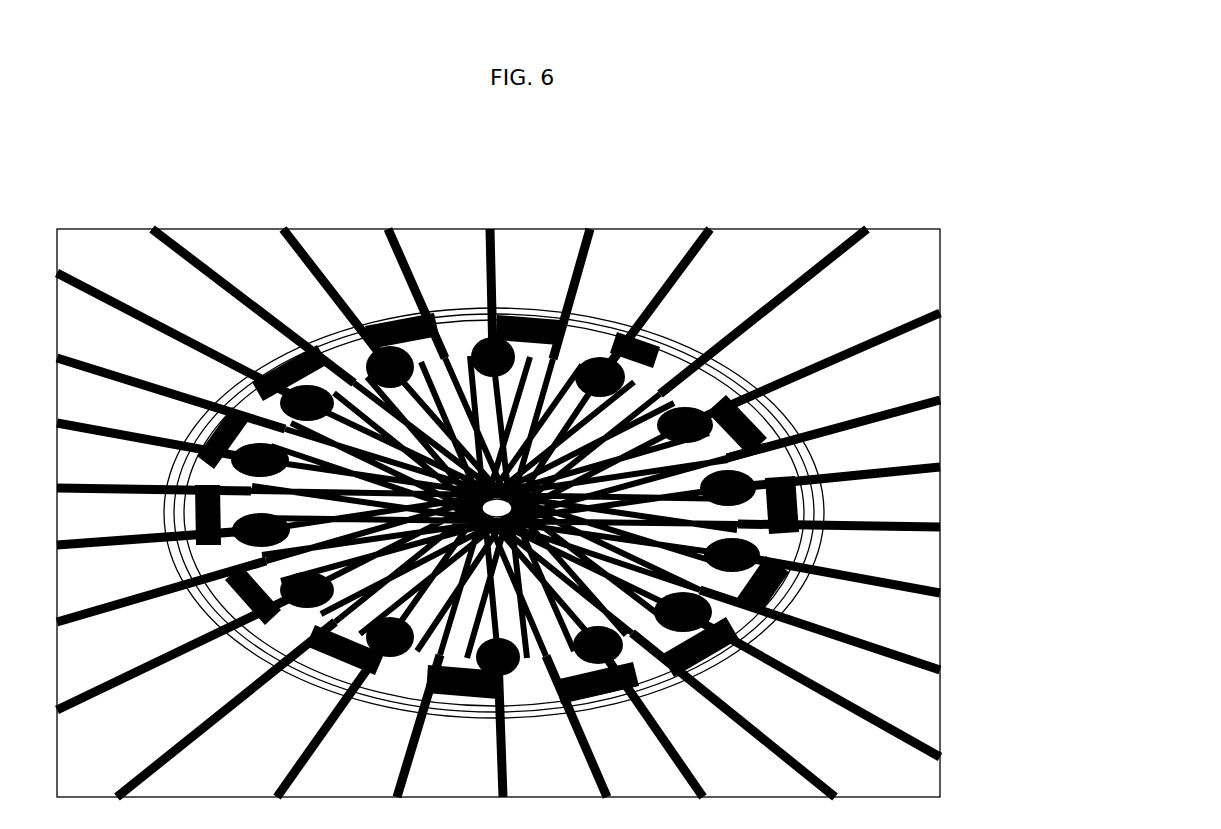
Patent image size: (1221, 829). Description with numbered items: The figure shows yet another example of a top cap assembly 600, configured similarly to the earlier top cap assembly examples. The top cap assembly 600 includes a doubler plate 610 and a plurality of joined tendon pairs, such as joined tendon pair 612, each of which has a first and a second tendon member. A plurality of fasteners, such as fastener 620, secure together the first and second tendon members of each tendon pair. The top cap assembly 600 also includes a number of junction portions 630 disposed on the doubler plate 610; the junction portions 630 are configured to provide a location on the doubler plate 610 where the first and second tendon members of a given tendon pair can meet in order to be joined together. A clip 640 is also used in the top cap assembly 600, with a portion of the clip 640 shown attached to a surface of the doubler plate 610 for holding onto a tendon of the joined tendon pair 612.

The top cap assembly 600 is at (1052, 77).
The doubler plate 610 is at (450, 305).
The joined tendon pair 612 is at (743, 400).
The fastener 620 is at (710, 384).
The junction portion 630 is at (763, 410).
The clip 640 is at (793, 440).